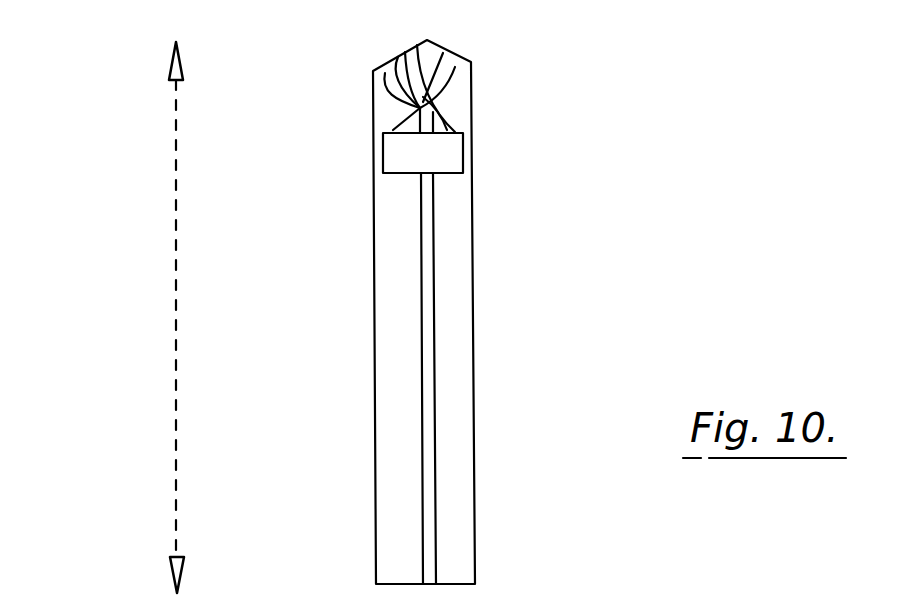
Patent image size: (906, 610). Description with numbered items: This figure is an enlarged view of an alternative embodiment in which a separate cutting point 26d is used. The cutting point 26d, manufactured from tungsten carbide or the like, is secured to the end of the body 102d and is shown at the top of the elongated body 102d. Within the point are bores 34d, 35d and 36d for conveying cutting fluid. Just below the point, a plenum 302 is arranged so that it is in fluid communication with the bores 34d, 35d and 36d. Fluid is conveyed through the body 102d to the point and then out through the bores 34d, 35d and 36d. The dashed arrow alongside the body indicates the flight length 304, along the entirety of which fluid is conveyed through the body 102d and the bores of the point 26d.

The cutting point 26d is at (440, 47).
The bore 34d is at (453, 77).
The bore 35d is at (400, 87).
The bore 36d is at (395, 134).
The plenum 302 is at (428, 156).
The body 102d is at (457, 325).
The flight length 304 is at (175, 378).